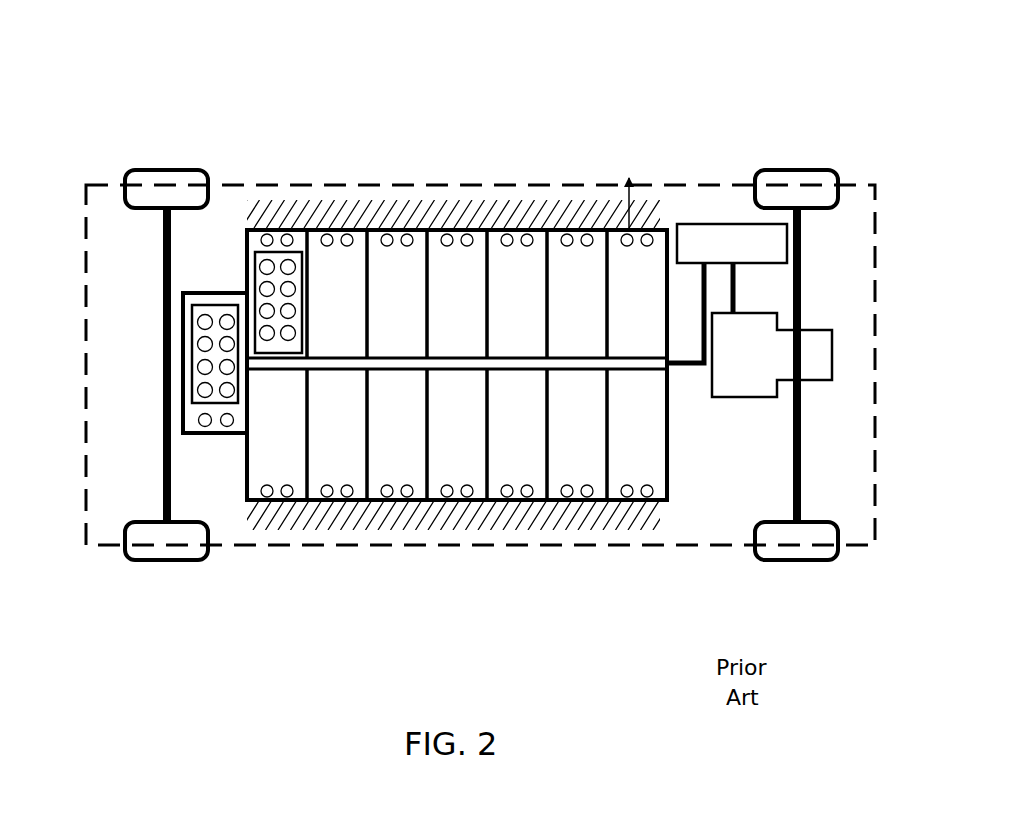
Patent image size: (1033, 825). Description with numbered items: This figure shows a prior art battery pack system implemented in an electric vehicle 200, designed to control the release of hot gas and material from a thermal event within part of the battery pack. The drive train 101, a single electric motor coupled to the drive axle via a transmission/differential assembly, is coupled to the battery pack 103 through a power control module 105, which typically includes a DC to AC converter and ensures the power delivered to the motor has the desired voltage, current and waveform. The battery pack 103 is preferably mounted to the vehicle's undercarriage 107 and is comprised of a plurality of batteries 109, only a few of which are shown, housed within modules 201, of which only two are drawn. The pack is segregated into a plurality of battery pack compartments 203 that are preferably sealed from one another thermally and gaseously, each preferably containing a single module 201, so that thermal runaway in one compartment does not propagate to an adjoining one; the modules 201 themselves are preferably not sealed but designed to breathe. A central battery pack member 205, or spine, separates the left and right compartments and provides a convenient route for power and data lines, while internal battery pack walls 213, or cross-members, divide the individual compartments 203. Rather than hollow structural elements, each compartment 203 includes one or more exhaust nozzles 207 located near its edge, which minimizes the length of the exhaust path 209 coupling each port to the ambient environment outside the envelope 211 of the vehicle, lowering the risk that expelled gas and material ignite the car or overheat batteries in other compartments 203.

The electric vehicle 200 is at (172, 98).
The drive train 101 is at (738, 313).
The battery pack 103 is at (516, 222).
The power control module 105 is at (697, 224).
The undercarriage 107 is at (279, 217).
The battery 109 is at (225, 390).
The module 201 is at (255, 273).
The battery pack compartment 203 is at (330, 450).
The central battery pack member 205 is at (334, 372).
The exhaust nozzle 207 is at (432, 233).
The exhaust path 209 is at (628, 190).
The envelope 211 is at (660, 185).
The internal battery pack wall 213 is at (303, 432).